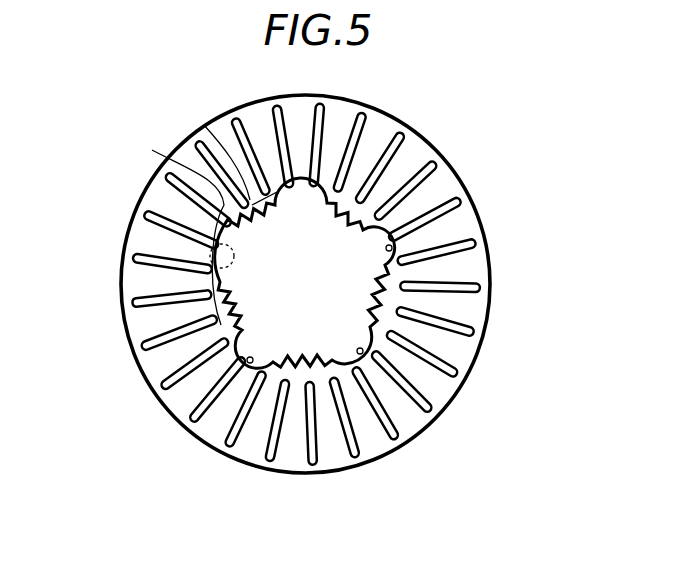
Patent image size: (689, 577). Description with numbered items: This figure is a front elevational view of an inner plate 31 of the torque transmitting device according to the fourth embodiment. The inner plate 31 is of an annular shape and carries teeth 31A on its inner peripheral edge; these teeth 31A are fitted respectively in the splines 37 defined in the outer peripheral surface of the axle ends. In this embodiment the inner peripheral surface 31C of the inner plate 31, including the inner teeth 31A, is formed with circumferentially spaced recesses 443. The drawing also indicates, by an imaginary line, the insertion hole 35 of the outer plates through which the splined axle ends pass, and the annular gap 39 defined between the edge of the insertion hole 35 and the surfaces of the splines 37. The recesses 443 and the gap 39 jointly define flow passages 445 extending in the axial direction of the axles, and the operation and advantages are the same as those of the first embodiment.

The inner plate 31 is at (470, 197).
The teeth 31A is at (355, 215).
The inner peripheral surface 31C is at (400, 296).
The insertion hole 35 is at (204, 125).
The splines 37 is at (220, 279).
The annular gap 39 is at (152, 150).
The recesses 443 is at (394, 250).
The flow passages 445 is at (220, 240).